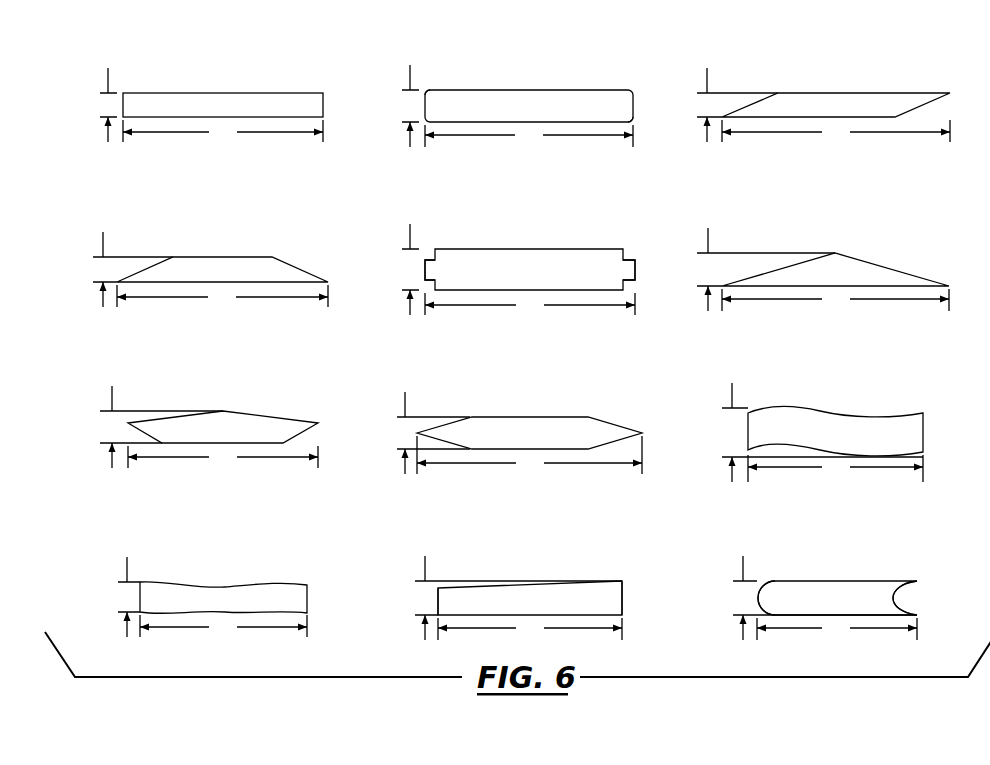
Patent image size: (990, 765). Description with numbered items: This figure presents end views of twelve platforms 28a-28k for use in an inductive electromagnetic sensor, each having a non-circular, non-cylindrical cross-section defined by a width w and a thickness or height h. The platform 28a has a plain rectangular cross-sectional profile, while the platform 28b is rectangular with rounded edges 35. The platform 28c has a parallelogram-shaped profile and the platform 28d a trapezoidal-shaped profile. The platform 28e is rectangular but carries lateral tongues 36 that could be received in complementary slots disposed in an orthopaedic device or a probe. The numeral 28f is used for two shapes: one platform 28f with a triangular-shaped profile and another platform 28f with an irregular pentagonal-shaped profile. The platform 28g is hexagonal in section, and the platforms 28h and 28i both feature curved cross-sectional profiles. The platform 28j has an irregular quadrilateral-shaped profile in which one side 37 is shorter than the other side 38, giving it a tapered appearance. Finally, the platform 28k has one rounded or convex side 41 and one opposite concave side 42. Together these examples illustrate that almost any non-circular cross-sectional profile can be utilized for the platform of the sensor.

The platform 28a is at (181, 91).
The platform 28b is at (489, 86).
The platform 28c is at (823, 90).
The platform 28d is at (200, 255).
The platform 28e is at (491, 248).
The platform 28f is at (851, 254).
The platform 28g is at (520, 414).
The platform 28h is at (808, 405).
The platform 28i is at (218, 581).
The platform 28j is at (596, 578).
The platform 28k is at (817, 578).
The rounded edges 35 is at (426, 88).
The lateral tongues 36 is at (426, 262).
The side 37 is at (447, 600).
The side 38 is at (610, 600).
The rounded or convex side 41 is at (757, 595).
The concave side 42 is at (915, 590).